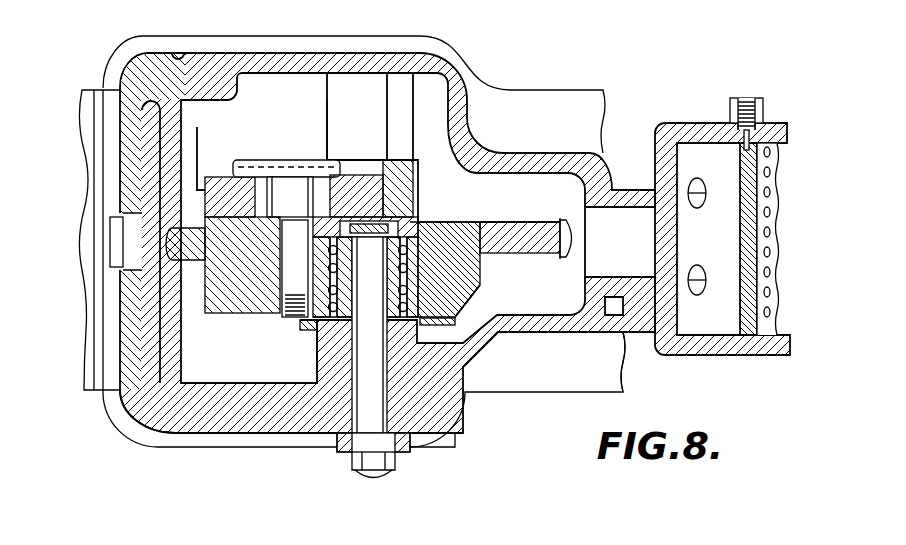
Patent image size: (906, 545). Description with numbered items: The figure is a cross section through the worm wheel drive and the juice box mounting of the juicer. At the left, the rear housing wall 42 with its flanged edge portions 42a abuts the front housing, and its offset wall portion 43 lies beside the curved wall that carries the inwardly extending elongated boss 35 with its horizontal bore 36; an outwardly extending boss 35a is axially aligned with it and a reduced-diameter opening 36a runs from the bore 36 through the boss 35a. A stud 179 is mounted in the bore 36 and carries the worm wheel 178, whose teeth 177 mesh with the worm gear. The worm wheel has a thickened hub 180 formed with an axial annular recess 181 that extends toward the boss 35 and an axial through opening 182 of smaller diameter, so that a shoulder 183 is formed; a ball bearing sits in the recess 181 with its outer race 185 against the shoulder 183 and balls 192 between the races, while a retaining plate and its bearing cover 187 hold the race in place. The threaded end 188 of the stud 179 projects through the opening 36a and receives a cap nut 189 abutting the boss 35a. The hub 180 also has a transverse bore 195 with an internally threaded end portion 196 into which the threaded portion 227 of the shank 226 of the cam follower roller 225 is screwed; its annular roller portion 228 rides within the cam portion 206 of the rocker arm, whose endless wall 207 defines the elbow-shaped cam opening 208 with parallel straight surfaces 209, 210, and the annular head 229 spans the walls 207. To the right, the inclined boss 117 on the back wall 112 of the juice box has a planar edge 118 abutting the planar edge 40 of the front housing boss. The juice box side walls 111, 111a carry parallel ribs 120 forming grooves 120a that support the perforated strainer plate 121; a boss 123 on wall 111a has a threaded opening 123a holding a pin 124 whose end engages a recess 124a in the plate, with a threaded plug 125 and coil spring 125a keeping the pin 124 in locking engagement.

The elongated boss 35 is at (327, 410).
The boss 35a is at (403, 445).
The bore 36 is at (390, 407).
The opening of reduced diameter 36a is at (344, 446).
The outer planar edge surface 40 is at (622, 209).
The vertically extending wall 42 is at (130, 98).
The flanged edge portions 42a is at (179, 54).
The offset wall portion 43 is at (165, 420).
The side wall 111 is at (768, 342).
The side wall 111a is at (766, 128).
The inclined back wall 112 is at (672, 130).
The boss 117 is at (650, 165).
The inclined outer planar edge 118 is at (630, 338).
The elongated ribs 120 is at (736, 330).
The groove 120a is at (748, 355).
The perforated strainer plate 121 is at (740, 356).
The boss 123 is at (760, 98).
The threaded through opening 123a is at (736, 106).
The pin 124 is at (722, 128).
The recess 124a is at (743, 150).
The screw threaded plug 125 is at (742, 98).
The coil spring 125a is at (760, 112).
The teeth 177 is at (570, 242).
The worm wheel 178 is at (538, 225).
The stud 179 is at (425, 440).
The thickened hub 180 is at (512, 332).
The axial annular recess 181 is at (470, 345).
The axial through opening 182 is at (478, 230).
The shoulder 183 is at (470, 245).
The outer race 185 is at (468, 300).
The bearing cap 187 is at (408, 222).
The end of the stud 188 is at (373, 478).
The cap nut 189 is at (358, 472).
The balls 192 is at (440, 318).
The transverse through bore 195 is at (247, 347).
The internally threaded end portion 196 is at (268, 338).
The cam portion 206 is at (214, 154).
The endless wall 207 is at (220, 187).
The cam opening 208 is at (252, 215).
The straight surface 209 is at (258, 166).
The straight surface 210 is at (345, 175).
The cam follower roller 225 is at (318, 150).
The shank 226 is at (280, 275).
The externally threaded portion of reduced diameter 227 is at (293, 318).
The annular roller portion 228 is at (392, 205).
The annular head 229 is at (330, 203).